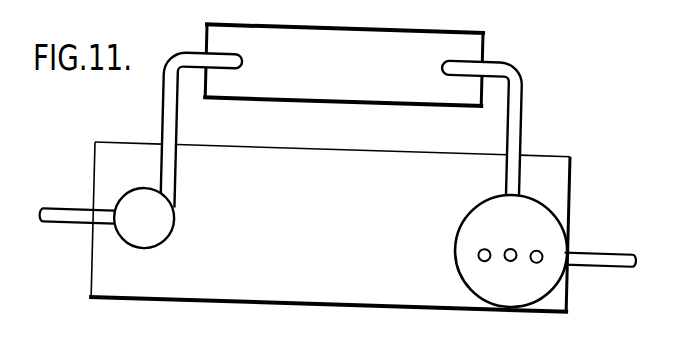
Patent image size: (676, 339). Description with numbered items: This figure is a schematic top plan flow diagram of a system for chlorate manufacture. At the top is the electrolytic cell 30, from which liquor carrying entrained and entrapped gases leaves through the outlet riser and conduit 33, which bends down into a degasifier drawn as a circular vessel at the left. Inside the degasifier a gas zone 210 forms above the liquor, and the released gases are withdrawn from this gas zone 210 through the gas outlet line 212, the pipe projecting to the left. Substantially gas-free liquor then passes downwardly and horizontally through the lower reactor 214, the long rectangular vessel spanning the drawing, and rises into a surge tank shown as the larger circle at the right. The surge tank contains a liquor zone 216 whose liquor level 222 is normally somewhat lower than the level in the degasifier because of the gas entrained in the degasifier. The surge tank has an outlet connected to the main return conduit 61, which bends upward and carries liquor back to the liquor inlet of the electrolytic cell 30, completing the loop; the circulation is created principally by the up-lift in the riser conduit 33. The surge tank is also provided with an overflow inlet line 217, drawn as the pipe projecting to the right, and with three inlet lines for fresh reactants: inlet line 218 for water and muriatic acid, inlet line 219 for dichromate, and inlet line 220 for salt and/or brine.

The electrolytic cell 30 is at (480, 38).
The outlet riser and conduit 33 is at (188, 51).
The main return conduit 61 is at (518, 87).
The gas zone 210 is at (165, 211).
The gas outlet line 212 is at (82, 211).
The lower reactor 214 is at (273, 291).
The liquor zone 216 is at (485, 205).
The overflow inlet line 217 is at (612, 254).
The inlet line 218 is at (487, 249).
The inlet line 219 is at (513, 248).
The inlet line 220 is at (539, 249).
The liquor level 222 is at (30, 332).